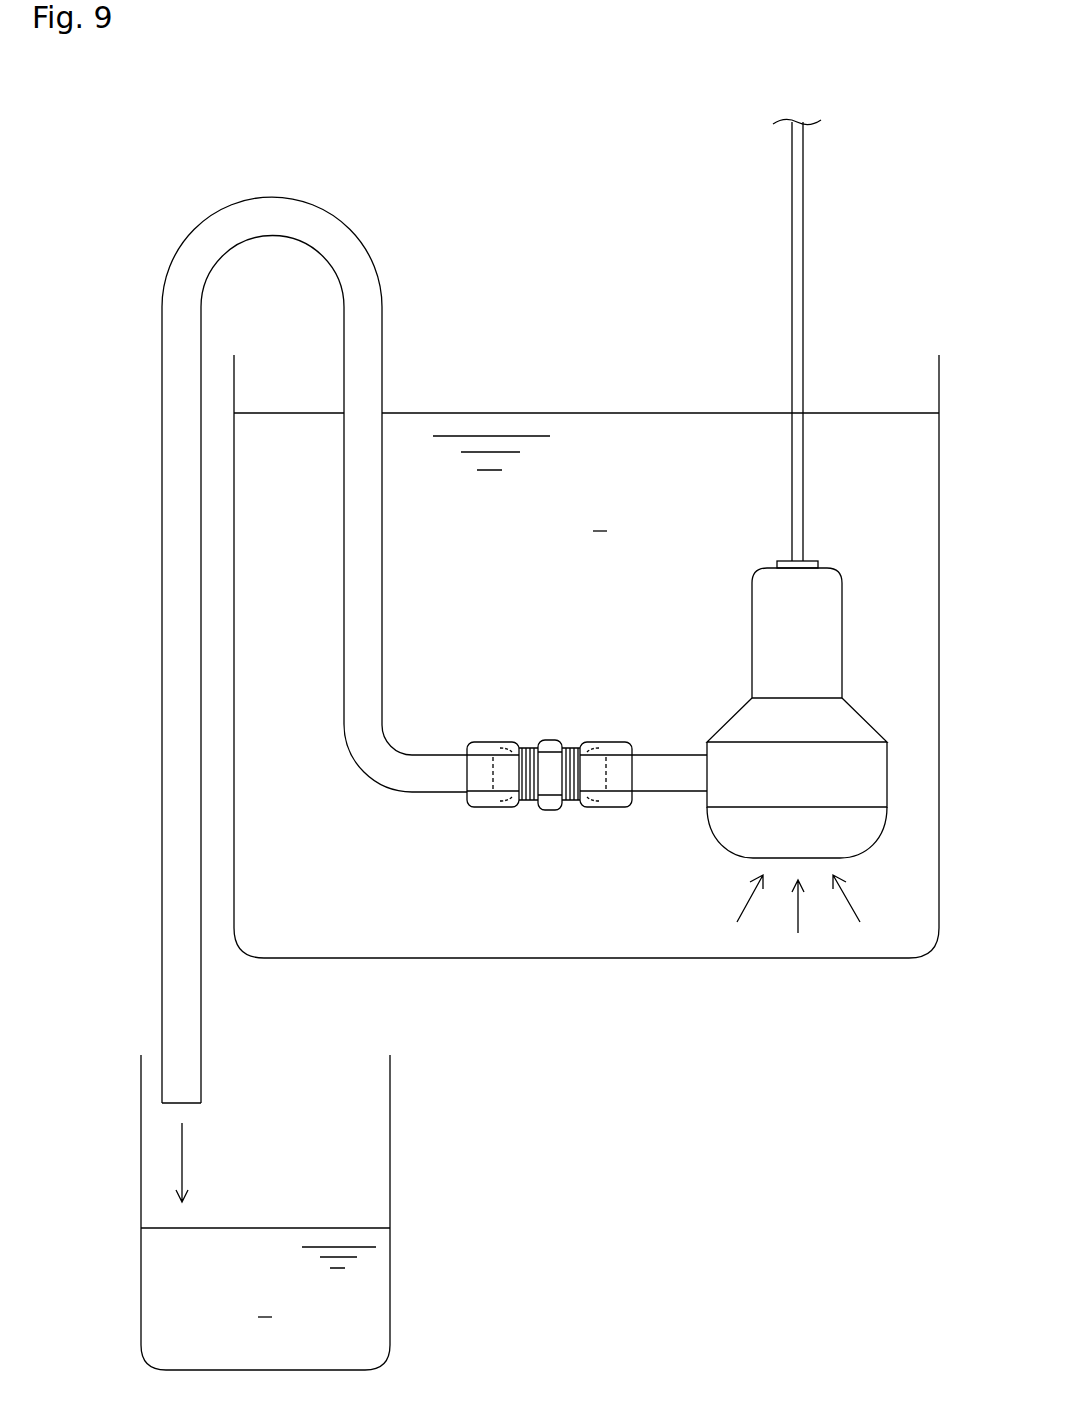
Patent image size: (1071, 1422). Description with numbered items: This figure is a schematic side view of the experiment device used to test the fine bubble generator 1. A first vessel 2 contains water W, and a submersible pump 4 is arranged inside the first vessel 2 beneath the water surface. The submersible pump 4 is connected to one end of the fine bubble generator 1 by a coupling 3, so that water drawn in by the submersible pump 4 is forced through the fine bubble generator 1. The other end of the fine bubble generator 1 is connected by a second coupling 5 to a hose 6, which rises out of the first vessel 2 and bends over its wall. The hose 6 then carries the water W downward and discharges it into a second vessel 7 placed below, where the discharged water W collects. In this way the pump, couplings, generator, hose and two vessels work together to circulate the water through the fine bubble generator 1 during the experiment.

The fine bubble generator 1 is at (548, 742).
The first vessel 2 is at (611, 958).
The coupling 3 is at (608, 807).
The submersible pump 4 is at (752, 613).
The coupling 5 is at (490, 807).
The hose 6 is at (383, 323).
The second vessel 7 is at (390, 1137).